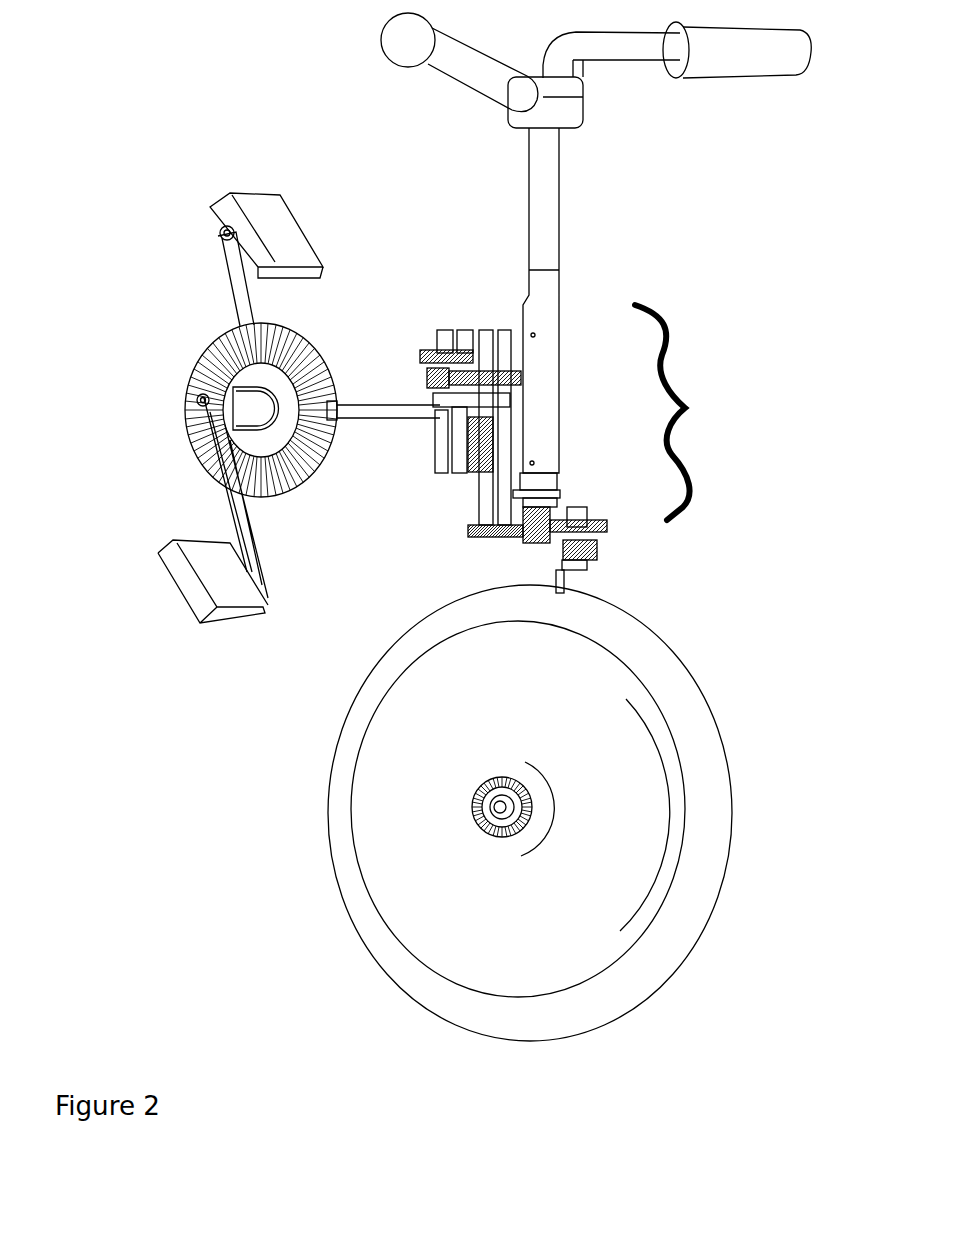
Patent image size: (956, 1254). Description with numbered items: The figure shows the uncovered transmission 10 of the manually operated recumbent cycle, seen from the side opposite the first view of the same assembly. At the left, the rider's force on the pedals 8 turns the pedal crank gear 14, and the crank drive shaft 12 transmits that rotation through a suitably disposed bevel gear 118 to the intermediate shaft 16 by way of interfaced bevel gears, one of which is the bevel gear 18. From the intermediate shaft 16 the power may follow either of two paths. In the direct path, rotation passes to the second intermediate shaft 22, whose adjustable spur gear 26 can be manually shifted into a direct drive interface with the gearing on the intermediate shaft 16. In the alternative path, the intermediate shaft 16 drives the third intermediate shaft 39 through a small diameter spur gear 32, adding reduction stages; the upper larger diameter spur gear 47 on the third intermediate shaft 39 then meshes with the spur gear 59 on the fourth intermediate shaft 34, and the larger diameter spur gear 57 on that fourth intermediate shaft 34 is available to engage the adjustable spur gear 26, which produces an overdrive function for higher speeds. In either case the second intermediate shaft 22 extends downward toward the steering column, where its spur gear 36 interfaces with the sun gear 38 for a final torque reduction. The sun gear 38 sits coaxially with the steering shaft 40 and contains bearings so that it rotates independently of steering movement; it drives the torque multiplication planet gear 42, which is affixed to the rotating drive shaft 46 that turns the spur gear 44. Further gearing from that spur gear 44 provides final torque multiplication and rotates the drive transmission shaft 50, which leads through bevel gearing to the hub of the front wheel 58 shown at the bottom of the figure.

The pedals 8 is at (253, 190).
The transmission 10 is at (694, 412).
The crank drive shaft 12 is at (360, 430).
The pedal crank gear 14 is at (210, 333).
The intermediate shaft 16 is at (480, 323).
The bevel gear 18 is at (478, 482).
The second intermediate shaft 22 is at (501, 322).
The adjustable spur gear 26 is at (520, 374).
The small diameter spur gear 32 is at (428, 380).
The fourth intermediate shaft 34 is at (462, 468).
The spur gear 36 is at (478, 548).
The sun gear 38 is at (560, 503).
The third intermediate shaft 39 is at (452, 445).
The steering shaft 40 is at (562, 287).
The torque multiplication planet gear 42 is at (590, 515).
The spur gear 44 is at (597, 548).
The rotating drive shaft 46 is at (590, 567).
The upper larger diameter spur gear 47 is at (437, 353).
The drive transmission shaft 50 is at (568, 585).
The larger diameter spur gear 57 is at (433, 423).
The front wheel 58 is at (712, 808).
The spur gear 59 is at (447, 327).
The bevel gear 118 is at (344, 392).